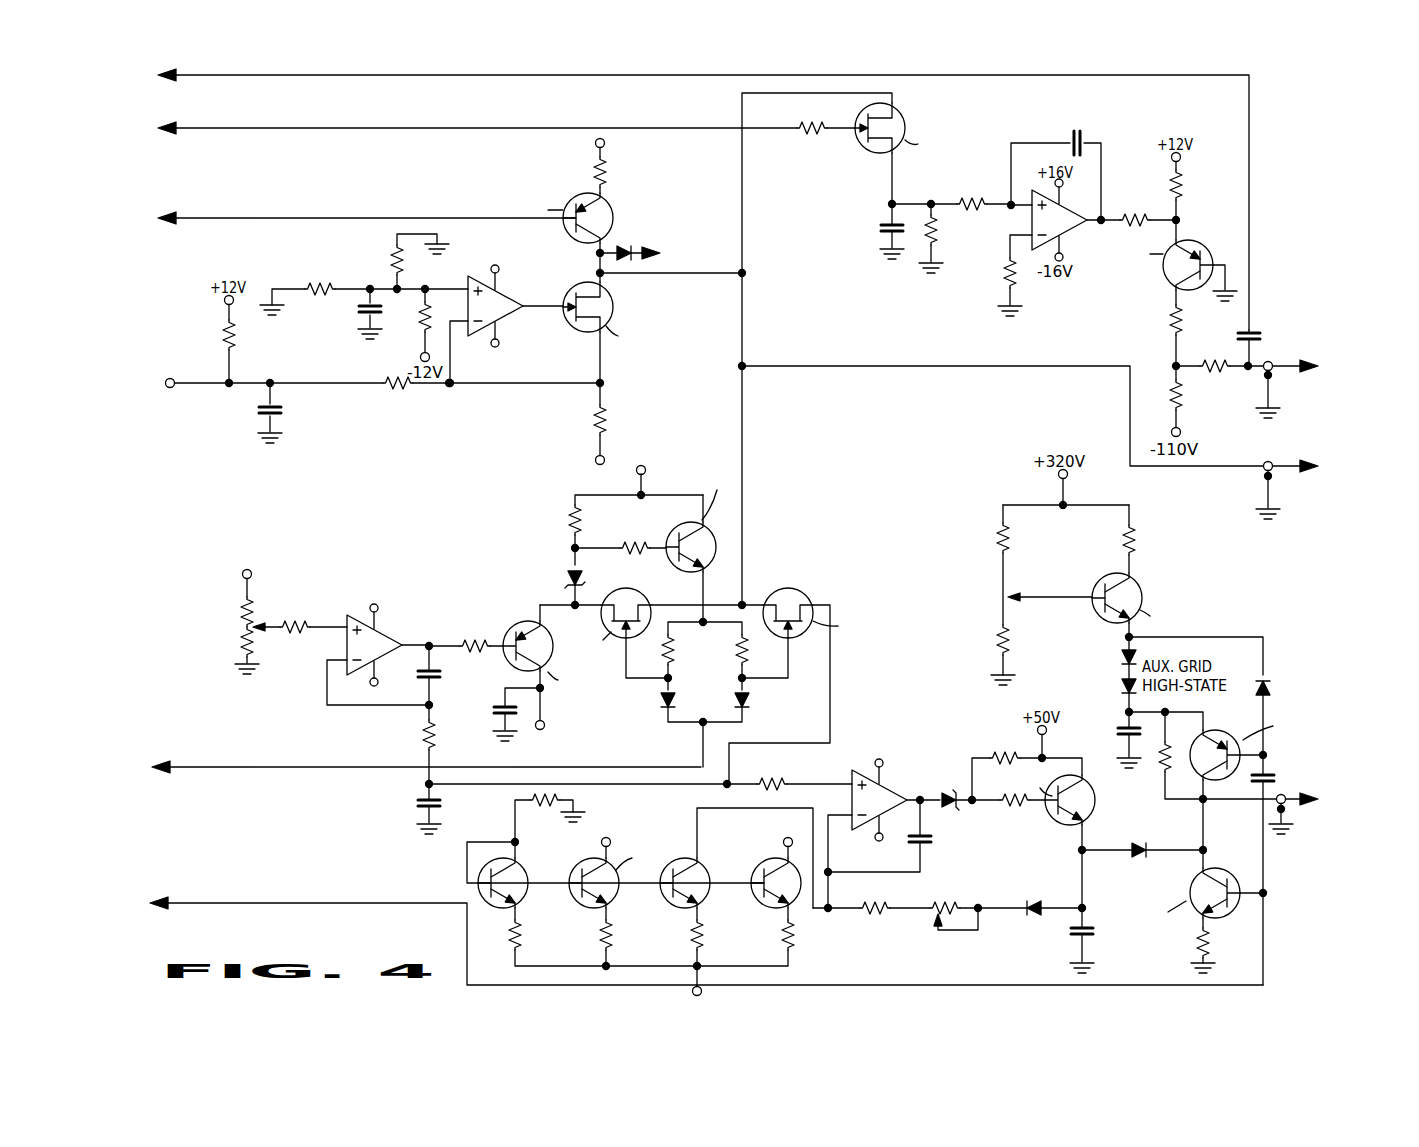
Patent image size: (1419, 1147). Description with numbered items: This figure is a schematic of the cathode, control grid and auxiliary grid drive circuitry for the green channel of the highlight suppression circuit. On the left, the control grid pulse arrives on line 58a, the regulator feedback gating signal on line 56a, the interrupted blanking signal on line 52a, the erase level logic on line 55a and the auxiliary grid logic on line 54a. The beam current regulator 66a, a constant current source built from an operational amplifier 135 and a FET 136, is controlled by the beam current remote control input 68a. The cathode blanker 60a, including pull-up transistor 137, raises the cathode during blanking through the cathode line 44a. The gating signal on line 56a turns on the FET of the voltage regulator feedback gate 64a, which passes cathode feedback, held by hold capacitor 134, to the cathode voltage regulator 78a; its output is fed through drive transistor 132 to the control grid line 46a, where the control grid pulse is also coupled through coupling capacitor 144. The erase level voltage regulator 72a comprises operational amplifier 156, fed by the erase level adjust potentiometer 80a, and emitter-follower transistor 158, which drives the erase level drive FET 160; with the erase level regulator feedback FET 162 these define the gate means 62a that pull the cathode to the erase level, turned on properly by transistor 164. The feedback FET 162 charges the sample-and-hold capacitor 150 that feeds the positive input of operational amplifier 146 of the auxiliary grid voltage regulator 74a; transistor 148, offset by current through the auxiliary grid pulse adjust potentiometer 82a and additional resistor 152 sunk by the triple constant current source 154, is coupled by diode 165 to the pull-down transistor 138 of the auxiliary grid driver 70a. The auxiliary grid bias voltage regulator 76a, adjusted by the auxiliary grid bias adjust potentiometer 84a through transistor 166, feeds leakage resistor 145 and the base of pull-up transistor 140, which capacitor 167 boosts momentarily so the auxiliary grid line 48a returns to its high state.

The control grid pulse line 58a is at (193, 80).
The regulator feedback gating signal line 56a is at (190, 133).
The interrupted blanking signal line 52a is at (190, 223).
The erase level logic signal line 55a is at (173, 772).
The auxiliary grid logic line 54a is at (173, 908).
The beam current remote control input 68a is at (182, 372).
The beam current regulator 66a is at (505, 336).
The cathode blanker 60a is at (620, 309).
The gate means 62a is at (715, 616).
The voltage regulator feedback gate 64a is at (928, 118).
The auxiliary grid driver 70a is at (1234, 842).
The erase level voltage regulator 72a is at (365, 667).
The auxiliary grid voltage regulator 74a is at (956, 780).
The auxiliary grid bias voltage regulator 76a is at (988, 565).
The cathode voltage regulator 78a is at (1096, 124).
The erase level adjust potentiometer 80a is at (258, 608).
The auxiliary grid pulse adjust potentiometer 82a is at (944, 901).
The auxiliary grid bias adjust potentiometer 84a is at (1012, 597).
The cathode line 44a is at (1283, 458).
The control grid line 46a is at (1283, 358).
The auxiliary grid line 48a is at (1290, 795).
The drive transistor 132 is at (1165, 278).
The hold capacitor 134 is at (878, 233).
The operational amplifier 135 is at (510, 306).
The FET 136 is at (614, 309).
The pull-up transistor 137 is at (571, 206).
The pull-down transistor 138 is at (1190, 893).
The pull-up transistor 140 is at (1220, 730).
The coupling capacitor 144 is at (1253, 328).
The leakage resistor 145 is at (1160, 768).
The operational amplifier 146 is at (885, 796).
The transistor 148 is at (1090, 814).
The sample-and-hold capacitor 150 is at (445, 805).
The additional resistor 152 is at (880, 914).
The triple constant current source 154 is at (810, 945).
The operational amplifier 156 is at (395, 642).
The emitter-follower transistor 158 is at (517, 630).
The erase level drive FET 160 is at (619, 595).
The erase level regulator feedback FET 162 is at (813, 600).
The transistor 164 is at (676, 535).
The diode 165 is at (1134, 858).
The transistor 166 is at (1143, 596).
The capacitor 167 is at (1272, 776).